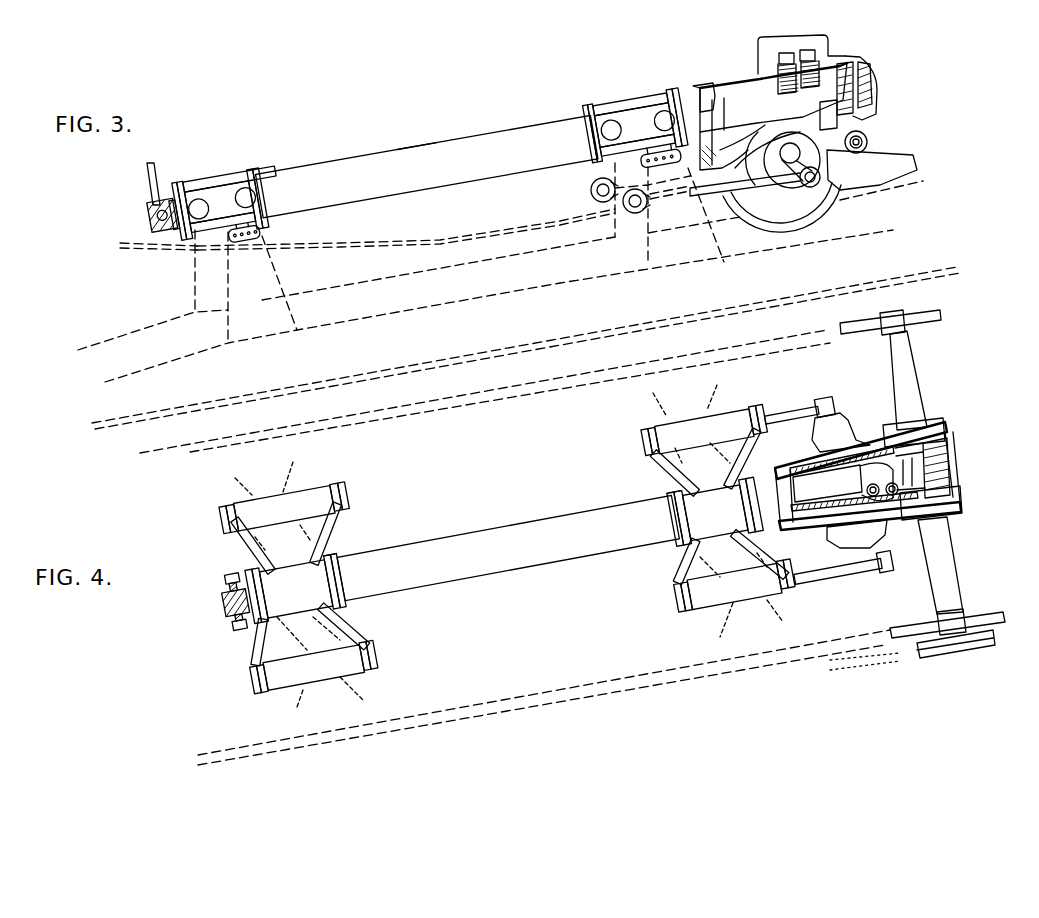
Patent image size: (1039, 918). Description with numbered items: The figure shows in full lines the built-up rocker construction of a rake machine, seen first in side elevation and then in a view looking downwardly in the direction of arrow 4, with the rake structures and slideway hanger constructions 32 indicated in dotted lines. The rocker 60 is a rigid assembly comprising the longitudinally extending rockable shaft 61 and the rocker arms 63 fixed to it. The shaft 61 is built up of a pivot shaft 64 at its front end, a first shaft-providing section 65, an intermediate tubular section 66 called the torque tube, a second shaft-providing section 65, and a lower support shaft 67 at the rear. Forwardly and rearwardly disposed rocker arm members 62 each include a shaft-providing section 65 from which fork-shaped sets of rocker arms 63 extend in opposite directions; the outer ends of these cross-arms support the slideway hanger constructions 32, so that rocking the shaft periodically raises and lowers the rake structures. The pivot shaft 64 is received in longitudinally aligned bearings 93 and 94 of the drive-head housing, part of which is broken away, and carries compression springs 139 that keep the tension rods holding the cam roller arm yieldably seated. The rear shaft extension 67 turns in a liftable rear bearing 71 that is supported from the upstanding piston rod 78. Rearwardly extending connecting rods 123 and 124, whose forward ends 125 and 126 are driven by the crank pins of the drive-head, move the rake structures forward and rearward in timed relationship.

In FIG. 3, the arrow 4 is at (483, 103).
In FIG. 3, the slideway hanger construction 32 is at (224, 230).
In FIG. 4, the slideway hanger construction 32 is at (702, 425).
In FIG. 3, the rocker 60 is at (392, 152).
In FIG. 4, the rocker 60 is at (347, 524).
In FIG. 3, the rockable shaft 61 is at (421, 143).
In FIG. 4, the rockable shaft 61 is at (325, 588).
In FIG. 4, the rocker arm member 62 is at (335, 550).
In FIG. 3, the rocker arm 63 is at (192, 186).
In FIG. 4, the rocker arm 63 is at (310, 543).
In FIG. 3, the pivot shaft 64 is at (776, 125).
In FIG. 4, the pivot shaft 64 is at (868, 476).
In FIG. 3, the shaft-providing section 65 is at (429, 163).
In FIG. 4, the shaft-providing section 65 is at (503, 551).
In FIG. 3, the intermediate tubular section 66 is at (427, 166).
In FIG. 4, the intermediate tubular section 66 is at (508, 548).
In FIG. 3, the lower support shaft 67 is at (147, 222).
In FIG. 4, the lower support shaft 67 is at (222, 604).
In FIG. 3, the rear rocker shaft bearing 71 is at (155, 233).
In FIG. 4, the rear rocker shaft bearing 71 is at (222, 589).
In FIG. 3, the piston rod 78 is at (149, 189).
In FIG. 4, the piston rod 78 is at (229, 573).
In FIG. 3, the bearing 93 is at (851, 80).
In FIG. 3, the bearing 94 is at (700, 86).
In FIG. 3, the connecting rod 123 is at (755, 185).
In FIG. 4, the connecting rod 123 is at (818, 580).
In FIG. 4, the connecting rod 124 is at (777, 416).
In FIG. 3, the forward end of connecting rod 125 is at (627, 210).
In FIG. 3, the forward end of connecting rod 126 is at (592, 188).
In FIG. 3, the compression spring 139 is at (760, 78).